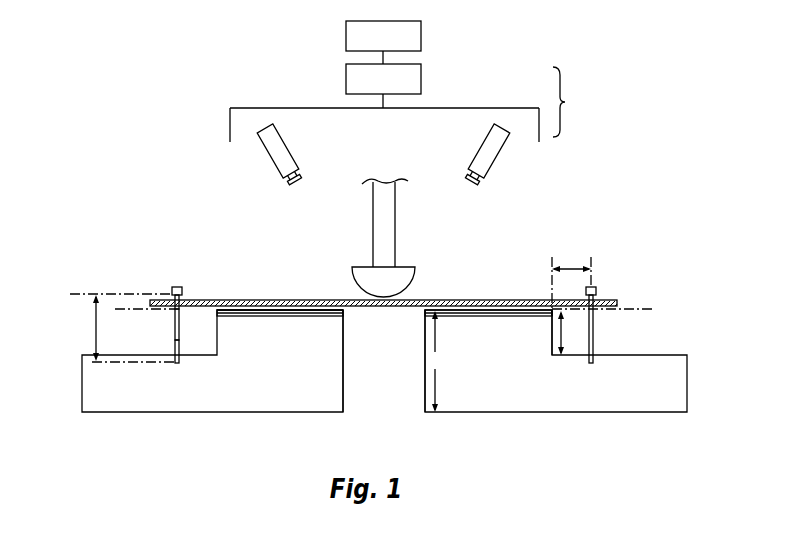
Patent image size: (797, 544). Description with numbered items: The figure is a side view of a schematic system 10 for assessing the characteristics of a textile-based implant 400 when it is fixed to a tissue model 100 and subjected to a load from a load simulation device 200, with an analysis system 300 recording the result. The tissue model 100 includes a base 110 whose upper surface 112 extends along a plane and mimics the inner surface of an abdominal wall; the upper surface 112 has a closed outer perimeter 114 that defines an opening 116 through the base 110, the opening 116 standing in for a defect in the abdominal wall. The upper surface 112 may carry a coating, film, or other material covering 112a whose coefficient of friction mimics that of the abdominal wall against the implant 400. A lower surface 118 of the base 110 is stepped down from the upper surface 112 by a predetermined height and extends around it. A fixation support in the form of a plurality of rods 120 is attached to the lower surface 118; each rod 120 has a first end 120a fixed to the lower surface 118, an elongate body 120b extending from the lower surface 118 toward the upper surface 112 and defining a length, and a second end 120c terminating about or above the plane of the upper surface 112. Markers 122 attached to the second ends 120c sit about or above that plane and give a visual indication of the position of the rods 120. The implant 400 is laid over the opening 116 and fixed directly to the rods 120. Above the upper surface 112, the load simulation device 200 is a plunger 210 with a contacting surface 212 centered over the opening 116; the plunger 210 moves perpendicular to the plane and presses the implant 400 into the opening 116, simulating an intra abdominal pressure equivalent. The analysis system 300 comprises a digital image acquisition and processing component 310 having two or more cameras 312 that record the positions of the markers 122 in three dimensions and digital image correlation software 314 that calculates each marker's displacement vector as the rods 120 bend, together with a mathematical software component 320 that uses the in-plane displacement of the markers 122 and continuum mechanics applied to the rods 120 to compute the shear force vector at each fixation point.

The system 10 is at (83, 79).
The analysis system 300 is at (229, 88).
The mathematical software component 320 is at (373, 50).
The digital image correlation software 314 is at (373, 93).
The digital image acquisition and processing component 310 is at (572, 102).
The cameras 312 is at (268, 163).
The load simulation device 200 is at (331, 210).
The plunger 210 is at (395, 221).
The contacting surface 212 is at (414, 283).
The textile-based implant 400 is at (218, 300).
The tissue model 100 is at (79, 332).
The base 110 is at (81, 378).
The lower surface 118 is at (660, 355).
The upper surface 112 is at (272, 311).
The material covering 112a is at (312, 302).
The closed outer perimeter 114 is at (545, 312).
The opening 116 is at (374, 365).
The rods 120 is at (365, 314).
The first end 120a is at (175, 358).
The elongate body 120b is at (175, 330).
The second end 120c is at (172, 290).
The markers 122 is at (177, 287).